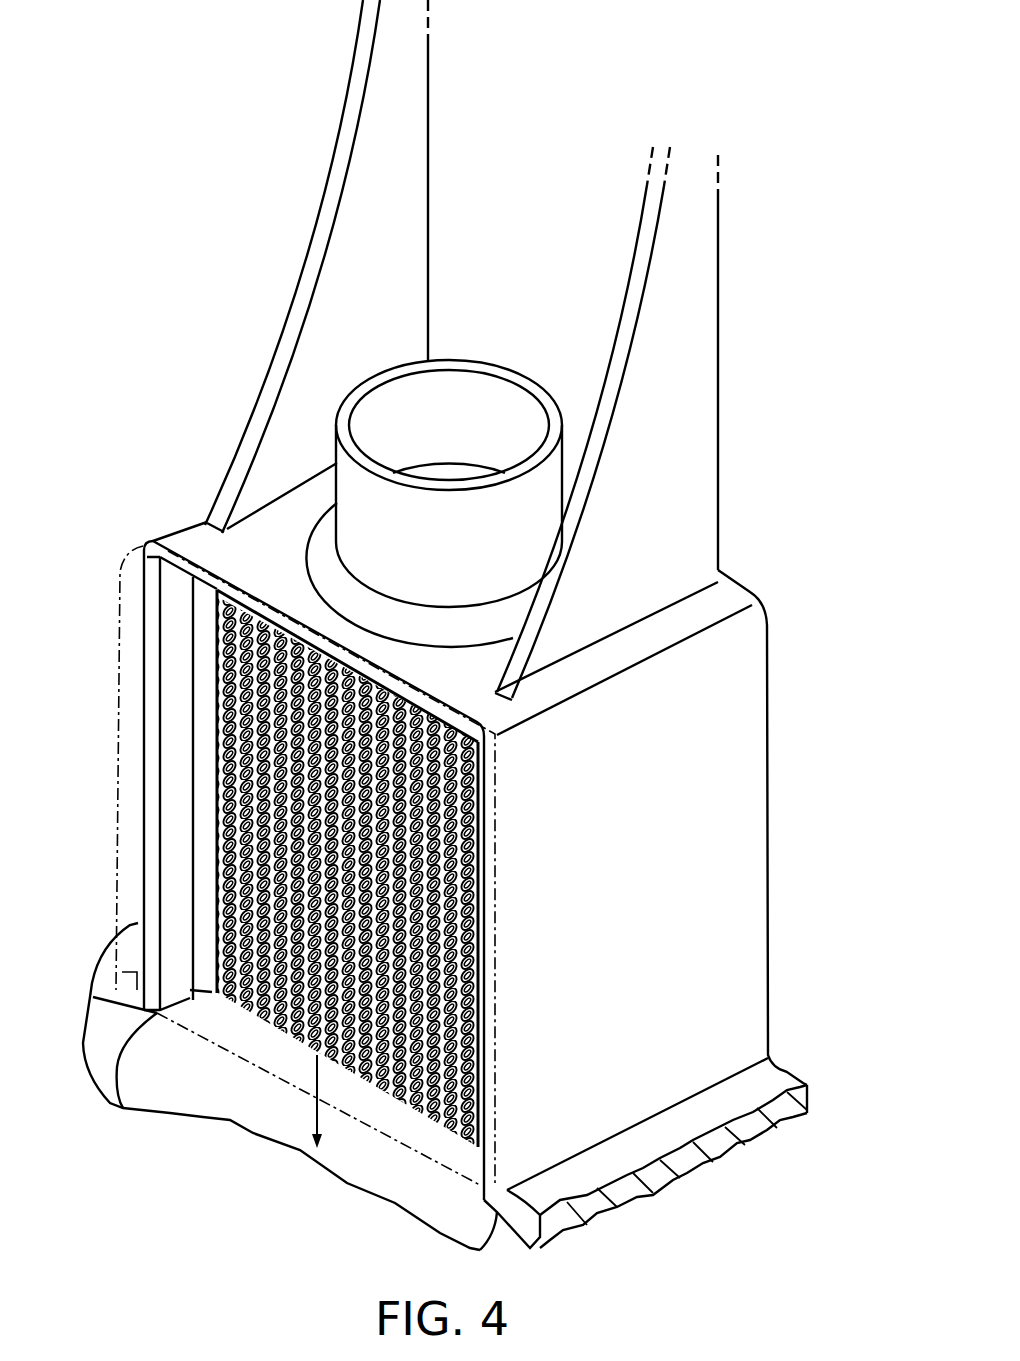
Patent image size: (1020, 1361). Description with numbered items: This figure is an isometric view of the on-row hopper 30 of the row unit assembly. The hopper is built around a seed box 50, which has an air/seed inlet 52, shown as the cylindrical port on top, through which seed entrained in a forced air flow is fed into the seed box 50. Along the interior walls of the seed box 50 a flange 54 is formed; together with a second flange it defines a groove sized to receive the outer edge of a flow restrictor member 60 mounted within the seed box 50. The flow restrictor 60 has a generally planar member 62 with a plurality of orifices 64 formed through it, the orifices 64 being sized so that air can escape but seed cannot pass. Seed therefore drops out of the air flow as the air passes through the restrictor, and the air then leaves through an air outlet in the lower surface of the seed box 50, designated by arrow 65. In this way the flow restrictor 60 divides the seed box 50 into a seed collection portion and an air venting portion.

The filter assembly 30 is at (435, 625).
The seed box 50 is at (630, 790).
The air/seed inlet 52 is at (487, 398).
The flange 54 is at (207, 796).
The flow restrictor member 60 is at (489, 932).
The planar member 62 is at (403, 1103).
The orifices 64 is at (474, 1037).
The air outlet arrow 65 is at (316, 1074).